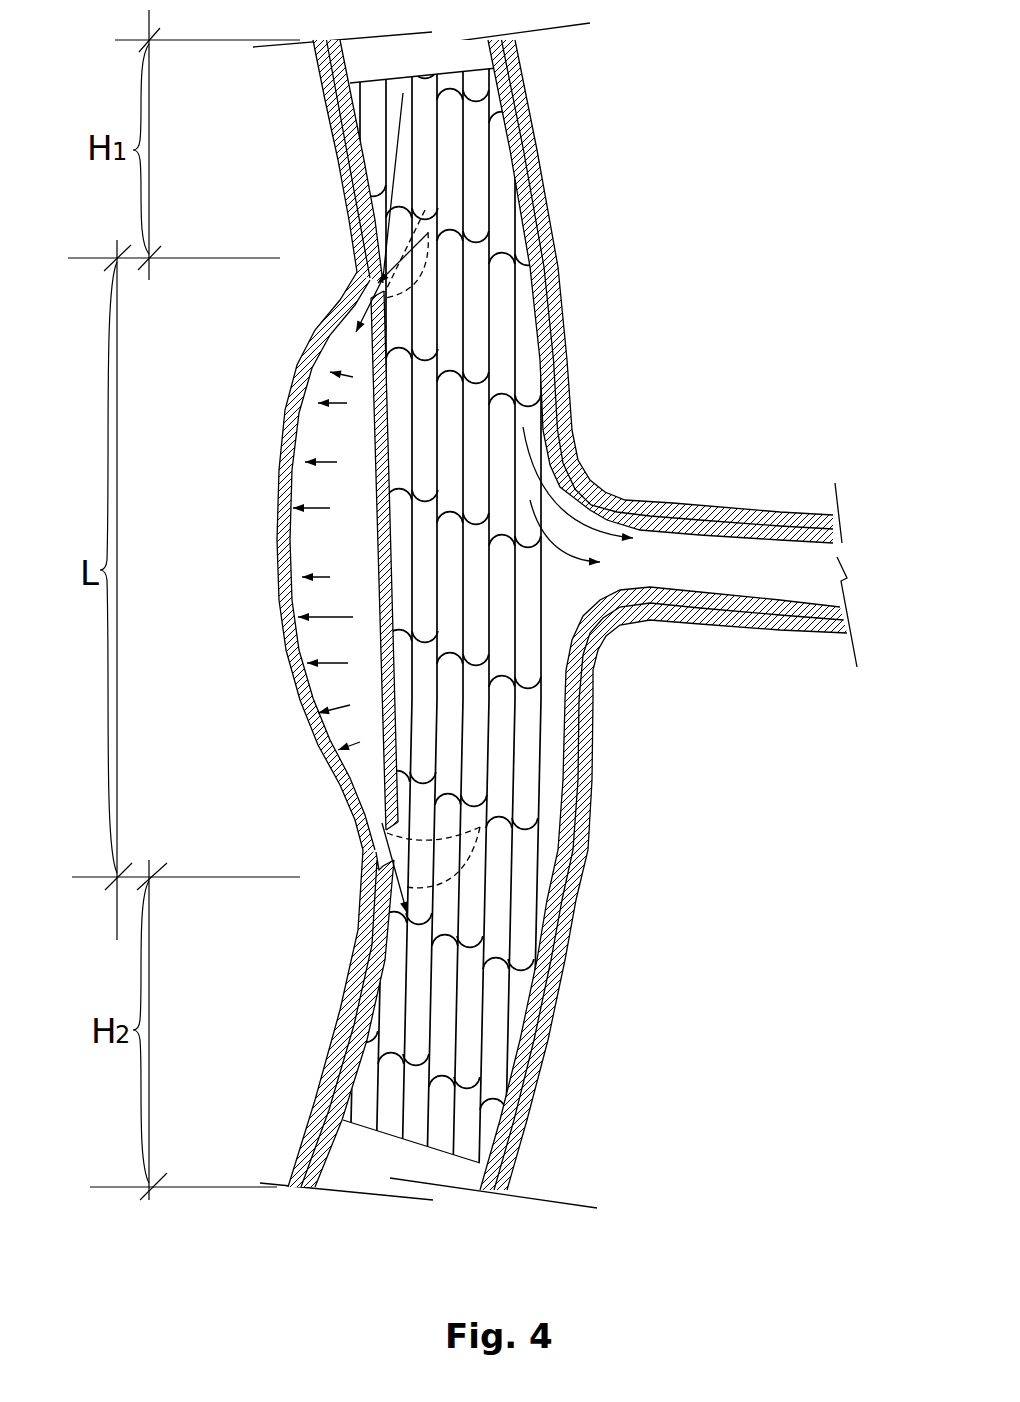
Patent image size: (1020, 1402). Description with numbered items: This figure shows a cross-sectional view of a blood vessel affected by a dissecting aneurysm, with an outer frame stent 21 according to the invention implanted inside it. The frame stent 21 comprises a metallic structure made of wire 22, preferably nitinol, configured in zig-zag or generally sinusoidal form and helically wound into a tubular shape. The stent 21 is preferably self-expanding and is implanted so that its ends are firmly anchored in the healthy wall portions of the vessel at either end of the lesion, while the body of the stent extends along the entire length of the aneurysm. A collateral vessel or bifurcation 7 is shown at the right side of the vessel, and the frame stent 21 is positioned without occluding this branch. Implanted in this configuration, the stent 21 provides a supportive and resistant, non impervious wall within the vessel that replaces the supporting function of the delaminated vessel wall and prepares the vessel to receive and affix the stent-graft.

The outer frame stent 21 is at (435, 52).
The wire 22 is at (463, 417).
The collateral vessel or bifurcation 7 is at (615, 628).